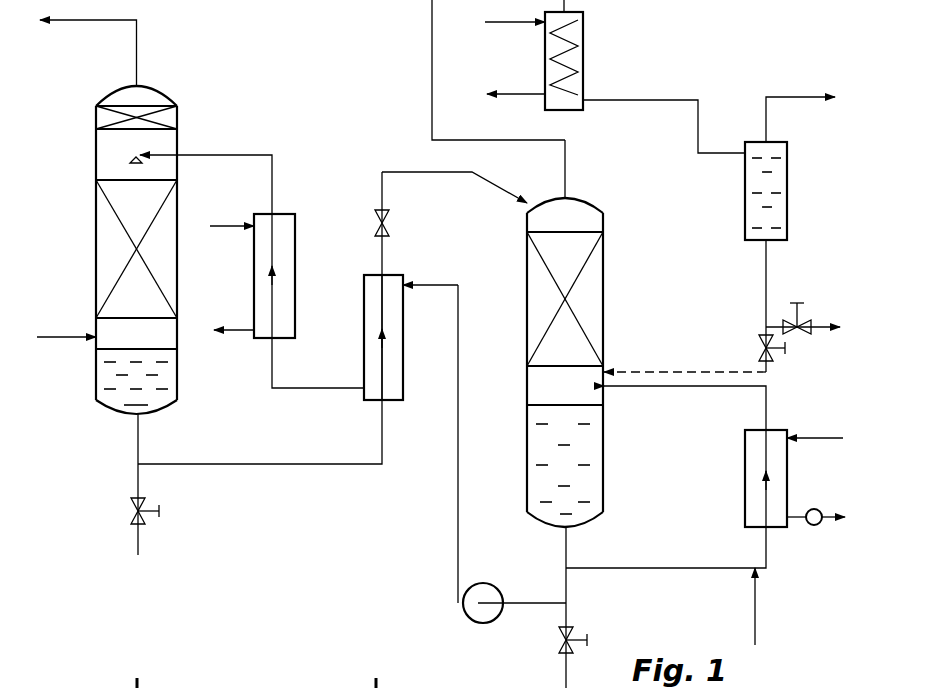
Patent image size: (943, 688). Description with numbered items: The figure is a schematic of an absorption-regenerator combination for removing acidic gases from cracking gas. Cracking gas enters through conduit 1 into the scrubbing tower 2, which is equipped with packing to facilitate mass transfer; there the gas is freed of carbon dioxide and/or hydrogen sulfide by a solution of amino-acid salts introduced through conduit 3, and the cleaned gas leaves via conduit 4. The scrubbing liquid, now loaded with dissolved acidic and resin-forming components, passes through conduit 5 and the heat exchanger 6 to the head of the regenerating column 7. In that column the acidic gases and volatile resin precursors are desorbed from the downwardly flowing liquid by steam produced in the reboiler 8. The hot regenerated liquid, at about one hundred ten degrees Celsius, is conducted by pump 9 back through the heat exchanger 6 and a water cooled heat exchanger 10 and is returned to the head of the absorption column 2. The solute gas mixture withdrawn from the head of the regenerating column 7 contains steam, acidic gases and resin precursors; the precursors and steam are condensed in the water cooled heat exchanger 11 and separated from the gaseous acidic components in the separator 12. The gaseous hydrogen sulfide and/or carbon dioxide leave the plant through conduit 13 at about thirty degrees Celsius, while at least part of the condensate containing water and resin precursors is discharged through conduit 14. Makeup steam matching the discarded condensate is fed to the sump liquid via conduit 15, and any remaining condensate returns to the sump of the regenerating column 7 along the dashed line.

The conduit 1 is at (60, 338).
The scrubbing tower 2 is at (180, 382).
The conduit 3 is at (241, 154).
The conduit 4 is at (78, 21).
The conduit 5 is at (277, 465).
The heat exchanger 6 is at (364, 360).
The regenerating column 7 is at (604, 293).
The reboiler 8 is at (790, 481).
The pump 9 is at (497, 585).
The water cooled heat exchanger 10 is at (296, 256).
The water cooled heat exchanger 11 is at (584, 58).
The separator 12 is at (790, 207).
The conduit 13 is at (778, 96).
The conduit 14 is at (762, 290).
The conduit 15 is at (757, 612).